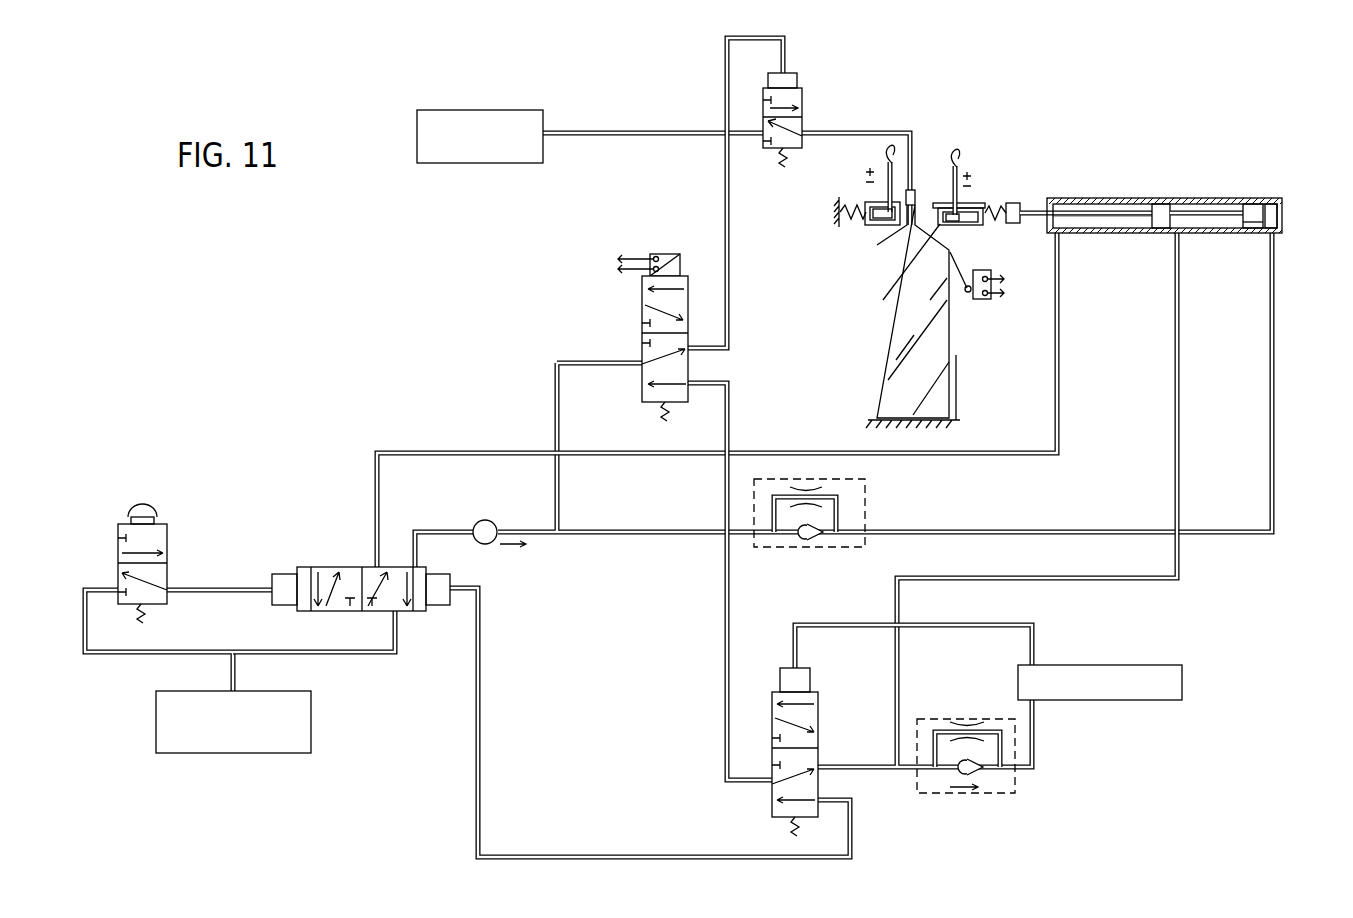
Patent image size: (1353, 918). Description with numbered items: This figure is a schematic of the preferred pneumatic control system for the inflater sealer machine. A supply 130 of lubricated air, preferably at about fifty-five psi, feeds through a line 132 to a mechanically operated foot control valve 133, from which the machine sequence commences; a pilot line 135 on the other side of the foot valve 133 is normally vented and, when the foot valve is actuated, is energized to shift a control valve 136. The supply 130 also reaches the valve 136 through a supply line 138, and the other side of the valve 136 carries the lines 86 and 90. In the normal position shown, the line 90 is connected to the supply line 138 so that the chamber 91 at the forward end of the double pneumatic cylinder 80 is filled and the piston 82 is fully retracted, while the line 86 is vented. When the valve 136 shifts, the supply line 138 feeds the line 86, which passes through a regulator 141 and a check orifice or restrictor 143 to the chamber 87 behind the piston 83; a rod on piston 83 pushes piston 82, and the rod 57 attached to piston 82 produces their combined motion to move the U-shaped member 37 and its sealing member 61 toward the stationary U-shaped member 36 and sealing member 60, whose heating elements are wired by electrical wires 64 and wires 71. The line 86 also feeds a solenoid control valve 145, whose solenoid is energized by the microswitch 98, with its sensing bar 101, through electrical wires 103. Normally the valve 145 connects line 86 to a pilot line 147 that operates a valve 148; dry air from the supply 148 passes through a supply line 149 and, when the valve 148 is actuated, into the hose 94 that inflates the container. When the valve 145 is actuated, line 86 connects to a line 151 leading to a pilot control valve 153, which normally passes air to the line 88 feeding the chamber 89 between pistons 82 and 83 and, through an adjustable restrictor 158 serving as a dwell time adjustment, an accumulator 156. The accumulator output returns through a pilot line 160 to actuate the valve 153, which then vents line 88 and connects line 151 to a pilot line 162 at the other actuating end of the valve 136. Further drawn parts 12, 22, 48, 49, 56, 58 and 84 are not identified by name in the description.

The hopper 12 is at (869, 325).
The support plate 22 is at (968, 400).
The U-shaped member 36 is at (863, 192).
The U-shaped member 37 is at (984, 196).
The spring 48 is at (837, 200).
The ground anchor 49 is at (850, 226).
The coupling block 56 is at (1014, 203).
The rod 57 is at (1032, 210).
The spring 58 is at (996, 207).
The sealing member 60 is at (878, 214).
The sealing member 61 is at (947, 205).
The electrical wires 64 is at (886, 164).
The wires 71 is at (956, 168).
The double pneumatic cylinder 80 is at (1261, 191).
The piston 82 is at (1161, 204).
The piston 83 is at (1258, 228).
The second piston 84 is at (1222, 210).
The pneumatic line 86 is at (554, 396).
The chamber 87 is at (1279, 220).
The line 88 is at (1180, 268).
The chamber 89 is at (1205, 210).
The line 90 is at (375, 487).
The chamber 91 is at (1089, 204).
The hose 94 is at (911, 131).
The microswitch 98 is at (983, 300).
The sensing bar 101 is at (960, 268).
The electrical wires 103 is at (1004, 293).
The supply of lubricated air 130 is at (311, 712).
The line 132 is at (165, 655).
The foot control valve 133 is at (170, 536).
The pilot line 135 is at (203, 593).
The control valve 136 is at (336, 567).
The supply line 138 is at (300, 654).
The regulator 141 is at (482, 520).
The restrictor 143 is at (866, 500).
The solenoid control valve 145 is at (640, 319).
The pilot line 147 is at (730, 264).
The valve 148 is at (543, 121).
The supply line 149 is at (643, 131).
The line 151 is at (731, 421).
The pilot control valve 153 is at (820, 717).
The accumulator 156 is at (1140, 700).
The adjustable restrictor 158 is at (1016, 782).
The pilot line 160 is at (965, 624).
The pilot line 162 is at (481, 680).